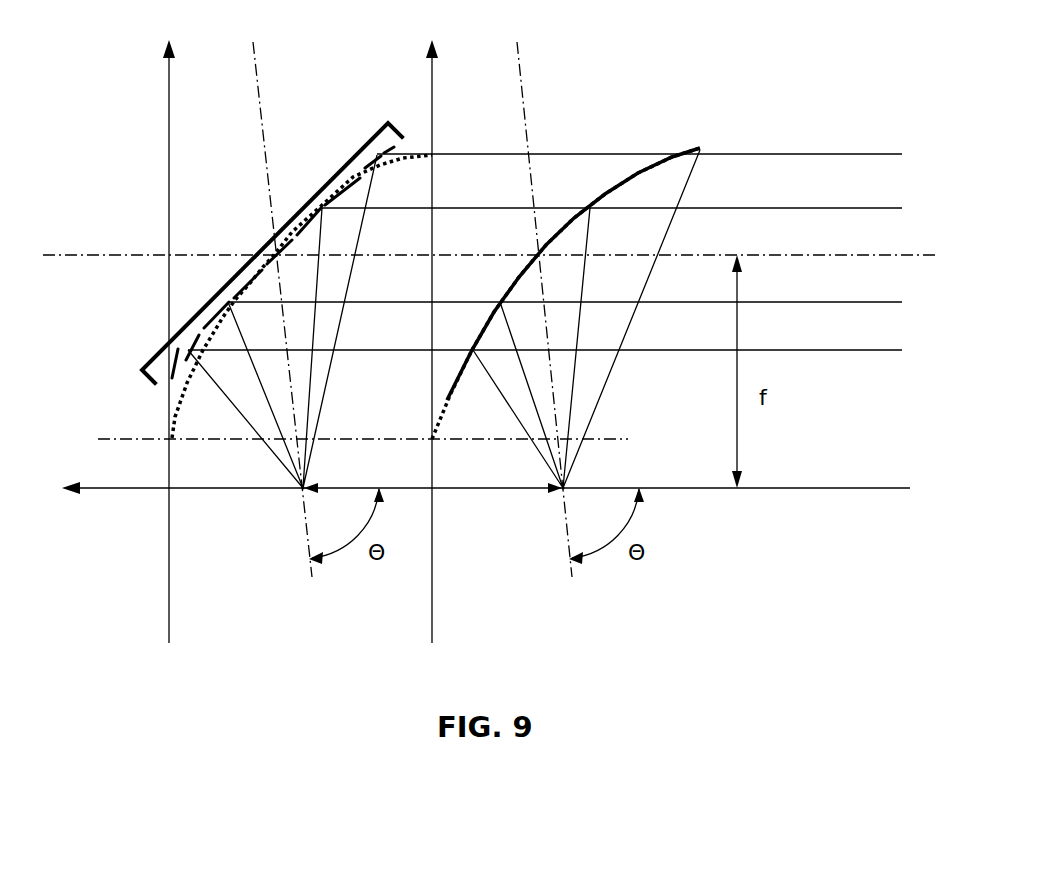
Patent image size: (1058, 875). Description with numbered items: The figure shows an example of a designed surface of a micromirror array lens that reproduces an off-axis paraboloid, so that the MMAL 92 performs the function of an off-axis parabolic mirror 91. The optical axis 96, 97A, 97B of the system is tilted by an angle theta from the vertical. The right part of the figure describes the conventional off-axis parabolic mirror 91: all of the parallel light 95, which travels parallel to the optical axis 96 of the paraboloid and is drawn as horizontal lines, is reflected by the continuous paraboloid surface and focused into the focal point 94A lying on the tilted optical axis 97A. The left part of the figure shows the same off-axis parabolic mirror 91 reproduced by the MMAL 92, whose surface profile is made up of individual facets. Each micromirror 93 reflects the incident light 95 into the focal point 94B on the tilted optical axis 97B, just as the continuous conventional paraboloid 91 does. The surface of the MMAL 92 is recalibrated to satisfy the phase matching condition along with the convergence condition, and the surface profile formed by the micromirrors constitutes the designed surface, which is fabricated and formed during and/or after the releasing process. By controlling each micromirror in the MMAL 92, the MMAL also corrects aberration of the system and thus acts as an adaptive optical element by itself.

The off-axis parabolic mirror 91 is at (648, 160).
The MMAL 92 is at (387, 122).
The micromirror 93 is at (170, 383).
The focal point 94A is at (558, 495).
The focal point 94B is at (297, 493).
The parallel light 95 is at (808, 357).
The optical axis 96 is at (158, 252).
The optical axis 97A is at (512, 102).
The optical axis 97B is at (255, 100).